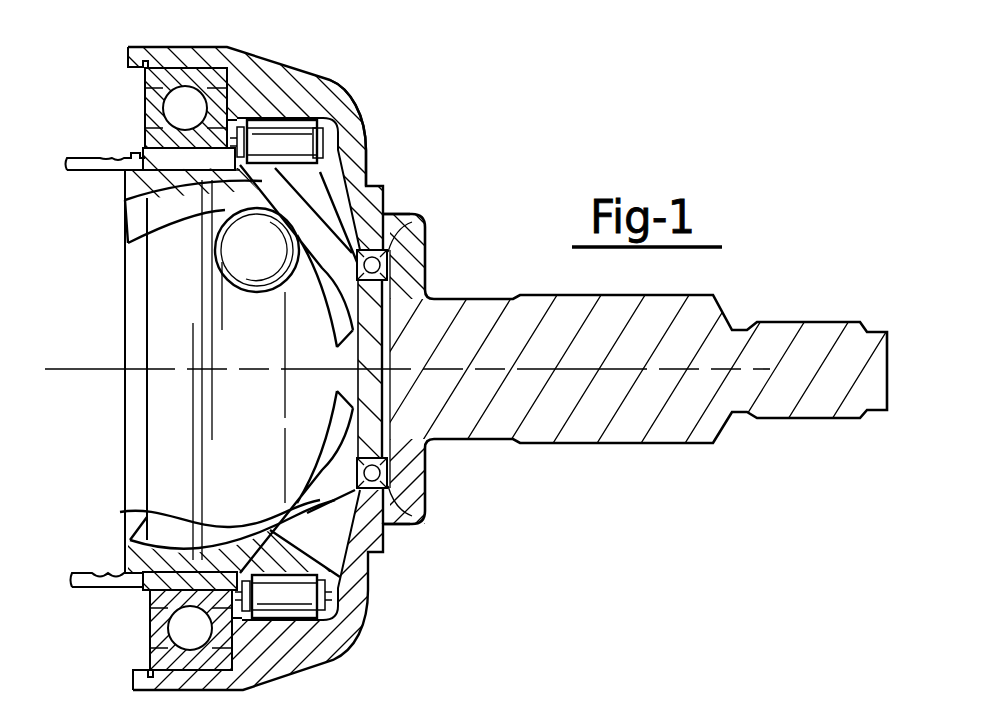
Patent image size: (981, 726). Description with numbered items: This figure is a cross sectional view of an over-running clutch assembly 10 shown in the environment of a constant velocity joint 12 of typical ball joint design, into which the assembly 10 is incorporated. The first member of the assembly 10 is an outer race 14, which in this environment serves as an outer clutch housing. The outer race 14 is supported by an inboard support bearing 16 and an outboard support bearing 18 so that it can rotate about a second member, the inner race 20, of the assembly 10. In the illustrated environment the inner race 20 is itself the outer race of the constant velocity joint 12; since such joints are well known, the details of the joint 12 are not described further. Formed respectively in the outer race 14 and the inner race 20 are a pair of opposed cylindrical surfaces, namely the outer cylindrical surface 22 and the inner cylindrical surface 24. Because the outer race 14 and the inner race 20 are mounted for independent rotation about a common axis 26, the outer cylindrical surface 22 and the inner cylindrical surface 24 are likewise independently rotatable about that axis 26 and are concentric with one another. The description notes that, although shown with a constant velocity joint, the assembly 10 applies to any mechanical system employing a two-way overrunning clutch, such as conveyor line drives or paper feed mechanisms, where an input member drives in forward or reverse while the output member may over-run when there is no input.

The over-running clutch assembly 10 is at (330, 142).
The constant velocity joint 12 is at (178, 281).
The outer race 14 is at (277, 80).
The inboard support bearing 16 is at (183, 101).
The outboard support bearing 18 is at (388, 223).
The inner race 20 is at (125, 205).
The outer cylindrical surface 22 is at (322, 75).
The inner cylindrical surface 24 is at (280, 153).
The common axis 26 is at (82, 366).